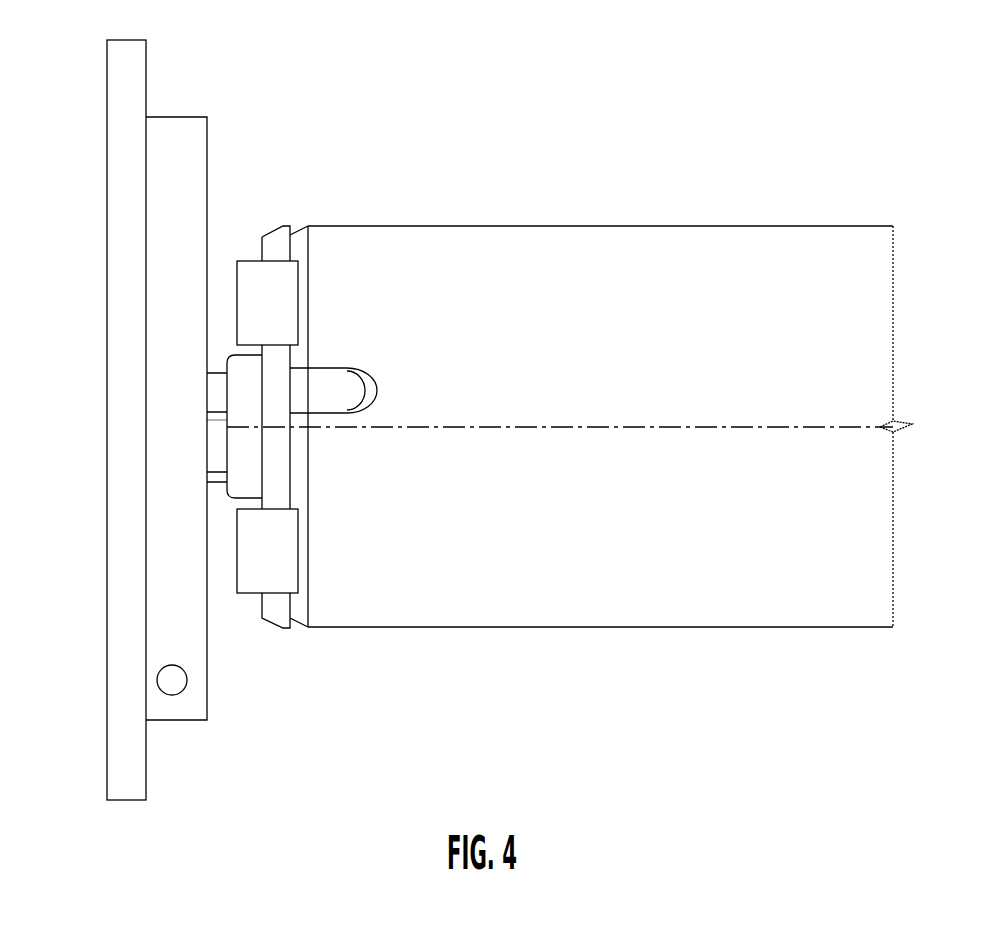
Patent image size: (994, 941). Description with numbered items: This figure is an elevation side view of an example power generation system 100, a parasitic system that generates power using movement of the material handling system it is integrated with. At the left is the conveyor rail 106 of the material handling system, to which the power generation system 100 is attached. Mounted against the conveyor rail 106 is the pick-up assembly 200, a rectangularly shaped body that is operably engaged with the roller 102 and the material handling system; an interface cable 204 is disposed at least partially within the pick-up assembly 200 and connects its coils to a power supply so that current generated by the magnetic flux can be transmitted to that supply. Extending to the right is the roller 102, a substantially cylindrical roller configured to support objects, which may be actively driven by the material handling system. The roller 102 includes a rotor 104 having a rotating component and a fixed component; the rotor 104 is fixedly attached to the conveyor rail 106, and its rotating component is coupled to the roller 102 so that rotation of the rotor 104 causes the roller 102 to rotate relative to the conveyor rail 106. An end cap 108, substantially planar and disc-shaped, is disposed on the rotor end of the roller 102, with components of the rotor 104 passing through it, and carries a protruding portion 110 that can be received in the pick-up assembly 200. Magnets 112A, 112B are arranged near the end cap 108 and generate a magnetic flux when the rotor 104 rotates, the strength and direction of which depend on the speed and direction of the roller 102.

The power generation system 100 is at (721, 102).
The roller 102 is at (731, 225).
The rotor 104 is at (213, 392).
The conveyor rail 106 is at (131, 785).
The end cap 108 is at (277, 251).
The protruding portion 110 is at (241, 450).
The magnet 112A is at (298, 301).
The magnet 112B is at (298, 560).
The pick-up assembly 200 is at (213, 108).
The interface cable 204 is at (158, 680).